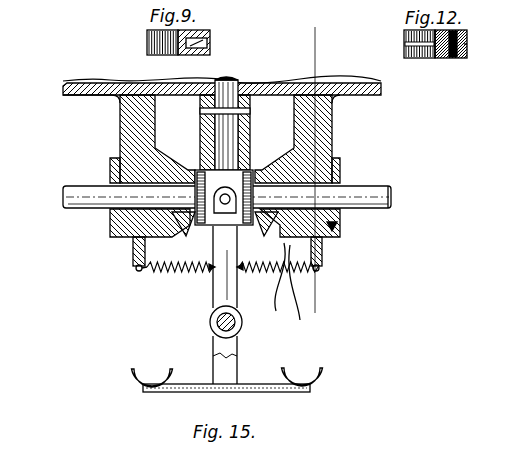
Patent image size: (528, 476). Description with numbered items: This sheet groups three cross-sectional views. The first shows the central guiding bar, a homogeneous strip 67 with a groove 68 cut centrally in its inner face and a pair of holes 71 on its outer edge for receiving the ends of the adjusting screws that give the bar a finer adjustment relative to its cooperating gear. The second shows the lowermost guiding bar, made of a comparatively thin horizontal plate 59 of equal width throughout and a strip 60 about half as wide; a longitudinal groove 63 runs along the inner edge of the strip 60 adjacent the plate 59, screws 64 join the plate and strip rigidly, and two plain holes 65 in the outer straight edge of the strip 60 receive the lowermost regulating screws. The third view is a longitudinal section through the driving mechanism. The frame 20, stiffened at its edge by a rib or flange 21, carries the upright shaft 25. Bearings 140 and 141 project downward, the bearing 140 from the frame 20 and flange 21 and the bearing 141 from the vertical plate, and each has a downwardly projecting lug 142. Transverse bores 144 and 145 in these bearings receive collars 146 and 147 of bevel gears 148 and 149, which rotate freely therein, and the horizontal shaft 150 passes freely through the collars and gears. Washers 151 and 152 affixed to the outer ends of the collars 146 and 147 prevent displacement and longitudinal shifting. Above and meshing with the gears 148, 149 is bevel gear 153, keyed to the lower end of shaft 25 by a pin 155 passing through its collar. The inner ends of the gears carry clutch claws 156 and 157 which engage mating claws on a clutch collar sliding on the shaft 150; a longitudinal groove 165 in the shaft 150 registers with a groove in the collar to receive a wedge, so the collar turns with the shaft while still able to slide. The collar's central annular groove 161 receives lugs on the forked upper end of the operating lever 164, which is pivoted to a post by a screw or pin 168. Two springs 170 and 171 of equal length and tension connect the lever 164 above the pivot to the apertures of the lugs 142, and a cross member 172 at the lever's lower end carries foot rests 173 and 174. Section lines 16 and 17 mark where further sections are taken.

In FIG. 9, the groove 68 is at (147, 46).
In FIG. 9, the homogeneous strip 67 is at (193, 55).
In FIG. 9, the holes 71 is at (205, 43).
In FIG. 12, the groove 63 is at (404, 44).
In FIG. 12, the strip 60 is at (468, 32).
In FIG. 12, the screws 64 is at (456, 58).
In FIG. 12, the horizontal plate 59 is at (428, 58).
In FIG. 12, the plain holes 65 is at (467, 44).
In FIG. 15, the frame 20 is at (88, 81).
In FIG. 15, the rib or flange 21 is at (92, 96).
In FIG. 15, the upright shaft 25 is at (213, 95).
In FIG. 15, the bearing 140 is at (125, 133).
In FIG. 15, the bearing 141 is at (322, 143).
In FIG. 15, the lug 142 is at (323, 255).
In FIG. 15, the transverse bore 144 is at (133, 240).
In FIG. 15, the transverse bore 145 is at (340, 227).
In FIG. 15, the collar 146 is at (110, 215).
In FIG. 15, the collar 147 is at (335, 170).
In FIG. 15, the bevel gear 148 is at (157, 270).
In FIG. 15, the bevel gear 149 is at (307, 290).
In FIG. 15, the horizontal shaft 150 is at (395, 204).
In FIG. 15, the washer 151 is at (110, 172).
In FIG. 15, the washer 152 is at (202, 130).
In FIG. 15, the bevel gear 153 is at (258, 160).
In FIG. 15, the pin 155 is at (258, 100).
In FIG. 15, the clutch claws 156 is at (199, 224).
In FIG. 15, the clutch claws 157 is at (257, 224).
In FIG. 15, the annular groove 161 is at (220, 193).
In FIG. 15, the operating lever 164 is at (214, 303).
In FIG. 15, the longitudinal groove 165 is at (382, 186).
In FIG. 15, the screw or pin 168 is at (210, 332).
In FIG. 15, the spring 170 is at (182, 271).
In FIG. 15, the spring 171 is at (274, 286).
In FIG. 15, the cross member 172 is at (190, 392).
In FIG. 15, the foot rest 173 is at (141, 383).
In FIG. 15, the foot rest 174 is at (321, 382).
In FIG. 15, the section line 16- 16 is at (292, 52).
In FIG. 15, the section line 17- 17 is at (214, 167).